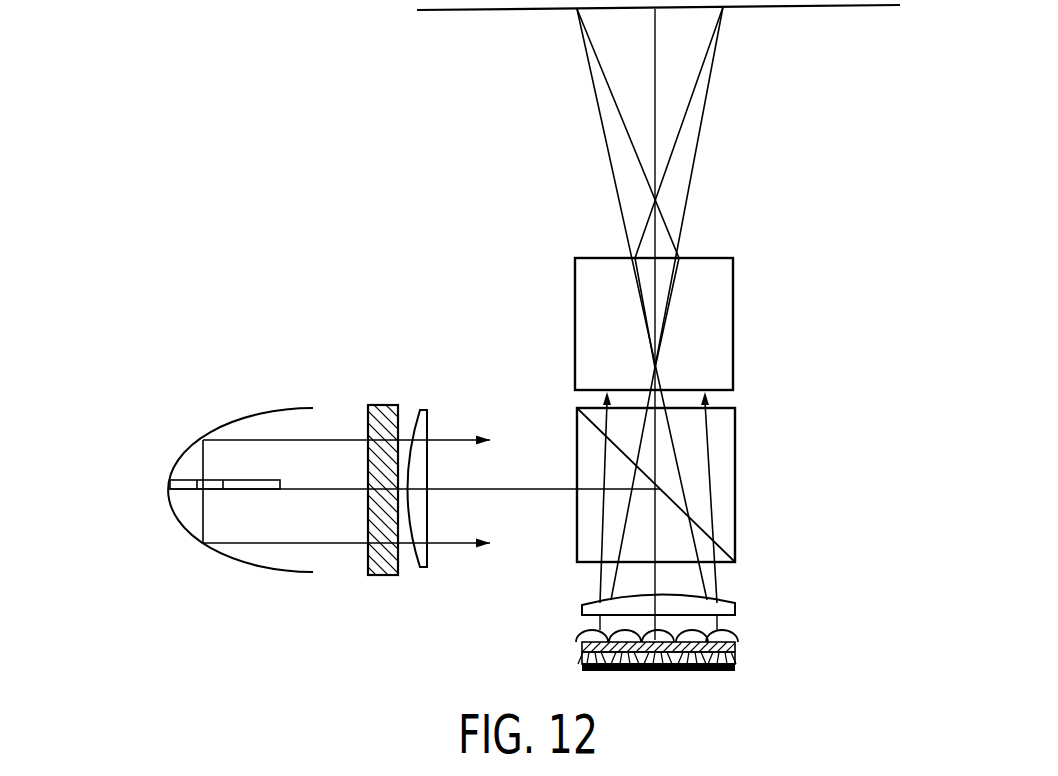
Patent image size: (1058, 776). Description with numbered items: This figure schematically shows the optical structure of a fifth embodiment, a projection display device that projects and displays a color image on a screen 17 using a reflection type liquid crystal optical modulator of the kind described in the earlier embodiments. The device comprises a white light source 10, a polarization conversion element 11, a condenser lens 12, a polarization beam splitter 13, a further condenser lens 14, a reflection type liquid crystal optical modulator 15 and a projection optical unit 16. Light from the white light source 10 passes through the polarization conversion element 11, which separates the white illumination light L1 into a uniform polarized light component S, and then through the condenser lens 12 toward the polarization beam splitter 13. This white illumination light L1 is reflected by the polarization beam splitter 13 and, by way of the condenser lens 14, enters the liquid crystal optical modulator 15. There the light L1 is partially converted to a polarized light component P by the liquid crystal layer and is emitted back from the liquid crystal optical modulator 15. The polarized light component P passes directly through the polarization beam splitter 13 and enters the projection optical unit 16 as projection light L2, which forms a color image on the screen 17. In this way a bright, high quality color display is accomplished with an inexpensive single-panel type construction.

The white light source 10 is at (232, 398).
The polarization conversion element 11 is at (385, 577).
The condenser lens 12 is at (420, 418).
The white illumination light L1 is at (447, 433).
The polarization beam splitter 13 is at (723, 452).
The projection light L2 is at (712, 495).
The condenser lens 14 is at (738, 612).
The reflection type liquid crystal optical modulator 15 is at (737, 650).
The projection optical unit 16 is at (723, 322).
The screen 17 is at (843, 8).